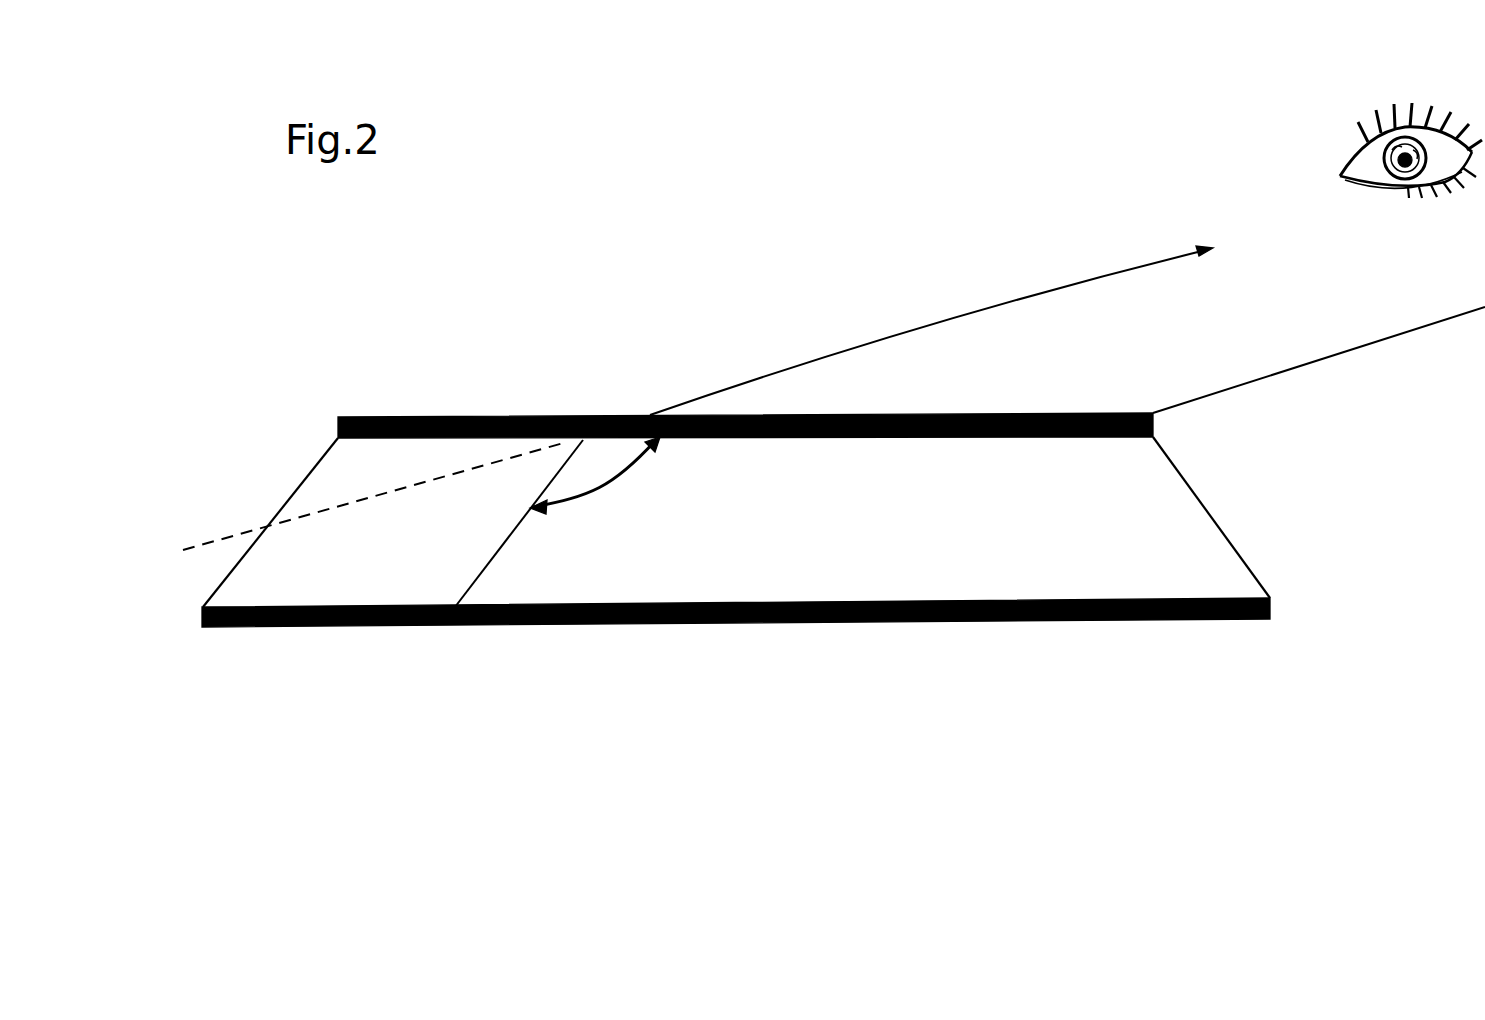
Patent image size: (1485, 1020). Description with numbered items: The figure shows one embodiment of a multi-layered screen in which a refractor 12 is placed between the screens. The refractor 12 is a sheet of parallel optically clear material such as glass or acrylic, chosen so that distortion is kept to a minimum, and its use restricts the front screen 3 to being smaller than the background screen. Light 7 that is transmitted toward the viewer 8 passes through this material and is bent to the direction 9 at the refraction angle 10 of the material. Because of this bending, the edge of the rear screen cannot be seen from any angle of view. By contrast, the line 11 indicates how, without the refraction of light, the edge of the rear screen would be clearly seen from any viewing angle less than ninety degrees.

The front screen 3 is at (736, 488).
The light 7 is at (931, 308).
The viewer 8 is at (1379, 126).
The bent light path 9 is at (519, 523).
The refraction angle 10 is at (616, 484).
The unrefracted line of sight 11 is at (339, 496).
The refractor 12 is at (1225, 517).